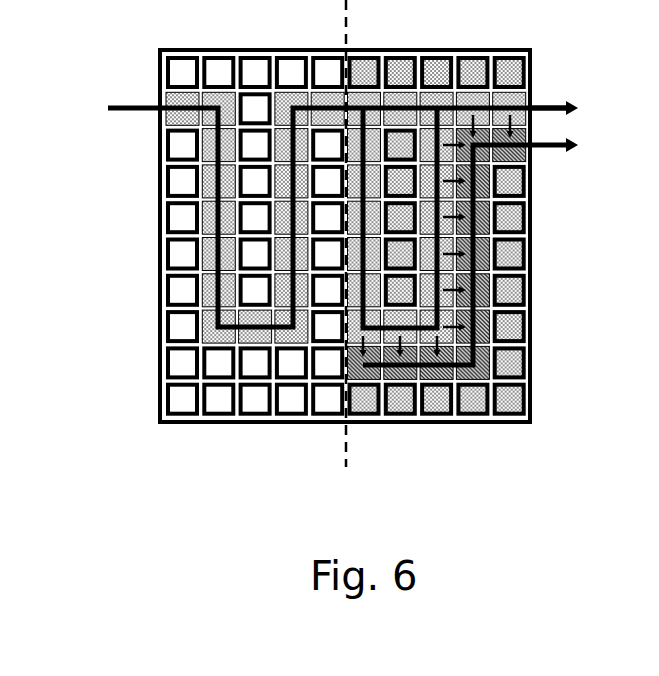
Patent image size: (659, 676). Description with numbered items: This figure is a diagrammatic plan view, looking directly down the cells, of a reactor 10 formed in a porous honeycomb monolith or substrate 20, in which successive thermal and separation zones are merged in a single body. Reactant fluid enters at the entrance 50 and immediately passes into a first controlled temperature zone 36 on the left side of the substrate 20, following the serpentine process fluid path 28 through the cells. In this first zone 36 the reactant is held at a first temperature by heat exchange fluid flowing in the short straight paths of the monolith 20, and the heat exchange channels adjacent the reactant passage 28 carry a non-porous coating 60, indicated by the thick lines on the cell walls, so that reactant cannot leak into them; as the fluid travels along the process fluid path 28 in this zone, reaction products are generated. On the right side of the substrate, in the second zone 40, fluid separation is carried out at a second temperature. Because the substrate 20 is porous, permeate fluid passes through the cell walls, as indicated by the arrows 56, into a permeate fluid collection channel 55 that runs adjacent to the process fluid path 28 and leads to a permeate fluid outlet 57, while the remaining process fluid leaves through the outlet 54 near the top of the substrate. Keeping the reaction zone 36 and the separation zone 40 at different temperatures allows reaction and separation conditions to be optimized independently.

The reactor 10 is at (358, 263).
The porous honeycomb monolith or substrate 20 is at (157, 70).
The process fluid path 28 is at (144, 115).
The entrance 50 is at (327, 218).
The first controlled temperature zone 36 is at (252, 398).
The second zone 40 is at (437, 398).
The first outlet 54 is at (588, 110).
The permeate fluid collection channel 55 is at (475, 292).
The arrows indicating permeate flow 56 is at (474, 189).
The permeate fluid outlet 57 is at (588, 146).
The non-porous coating 60 is at (195, 256).